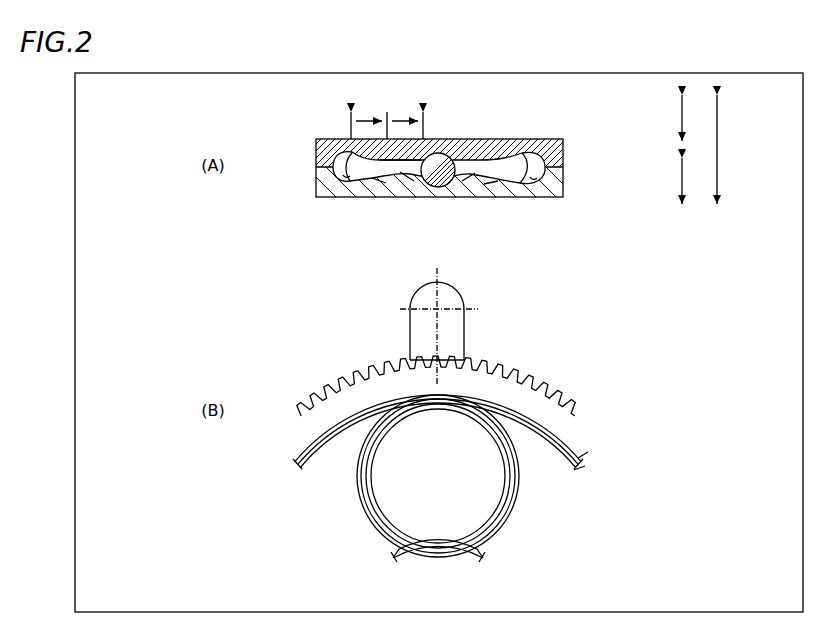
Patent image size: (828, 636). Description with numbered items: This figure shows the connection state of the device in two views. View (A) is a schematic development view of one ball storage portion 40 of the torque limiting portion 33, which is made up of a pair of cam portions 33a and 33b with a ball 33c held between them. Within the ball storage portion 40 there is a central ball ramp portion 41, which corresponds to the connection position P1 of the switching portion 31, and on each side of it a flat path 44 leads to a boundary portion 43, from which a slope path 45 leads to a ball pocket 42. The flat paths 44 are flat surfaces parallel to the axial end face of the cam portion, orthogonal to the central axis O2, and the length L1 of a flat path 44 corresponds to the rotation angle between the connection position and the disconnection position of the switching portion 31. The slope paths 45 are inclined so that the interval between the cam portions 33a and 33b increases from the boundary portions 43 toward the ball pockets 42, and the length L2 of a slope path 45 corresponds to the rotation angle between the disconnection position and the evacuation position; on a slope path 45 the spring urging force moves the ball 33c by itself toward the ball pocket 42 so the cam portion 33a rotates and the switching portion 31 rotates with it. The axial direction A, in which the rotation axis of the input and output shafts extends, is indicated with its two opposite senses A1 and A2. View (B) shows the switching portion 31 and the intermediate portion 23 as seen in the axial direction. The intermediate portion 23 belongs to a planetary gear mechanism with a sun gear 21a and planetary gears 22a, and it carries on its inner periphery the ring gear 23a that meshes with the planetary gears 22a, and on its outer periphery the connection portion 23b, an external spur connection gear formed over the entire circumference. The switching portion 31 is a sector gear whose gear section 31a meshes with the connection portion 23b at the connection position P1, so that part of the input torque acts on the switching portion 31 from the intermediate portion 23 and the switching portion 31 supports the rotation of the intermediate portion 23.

The holder 33 is at (312, 136).
The cam portion 33a is at (565, 183).
The cam portion 33b is at (565, 151).
The ball 33c is at (428, 157).
The ball storage portion 40 is at (331, 178).
The ball ramp portion 41 is at (452, 156).
The ball pocket 42 is at (344, 183).
The boundary portion 43 is at (387, 184).
The flat path 44 is at (404, 177).
The slope path 45 is at (341, 153).
The length of flat path L1 is at (407, 117).
The length of slope path L2 is at (369, 117).
The axial direction A is at (728, 149).
The direction A1 is at (694, 181).
The direction A2 is at (694, 118).
The switching portion 31 is at (420, 295).
The gear section 31a is at (412, 357).
The central axis O2 is at (438, 309).
The connection position P1 is at (387, 327).
The intermediate portion 23 is at (565, 413).
The ring gear 23a is at (583, 469).
The connection portion 23b is at (562, 405).
The planetary gears 22a is at (512, 502).
The sun gear 21a is at (482, 552).